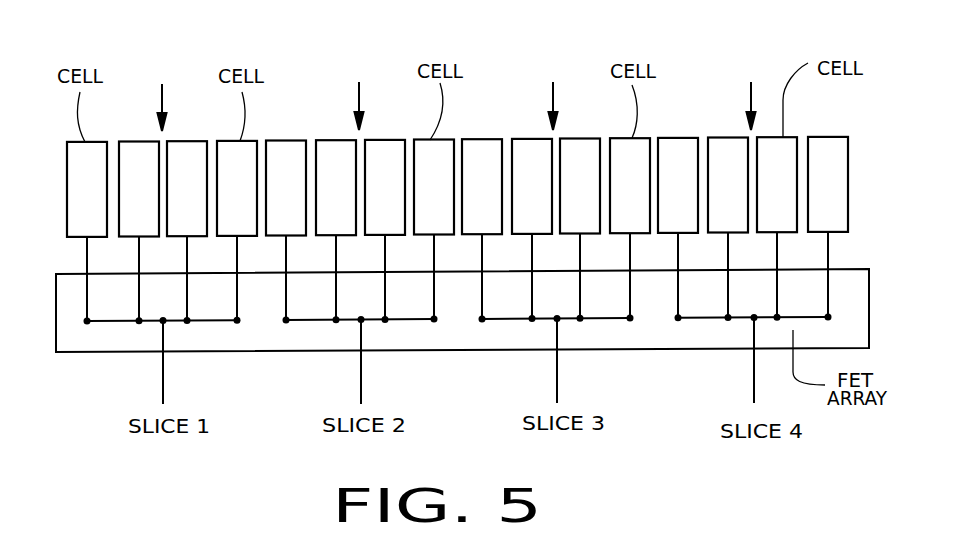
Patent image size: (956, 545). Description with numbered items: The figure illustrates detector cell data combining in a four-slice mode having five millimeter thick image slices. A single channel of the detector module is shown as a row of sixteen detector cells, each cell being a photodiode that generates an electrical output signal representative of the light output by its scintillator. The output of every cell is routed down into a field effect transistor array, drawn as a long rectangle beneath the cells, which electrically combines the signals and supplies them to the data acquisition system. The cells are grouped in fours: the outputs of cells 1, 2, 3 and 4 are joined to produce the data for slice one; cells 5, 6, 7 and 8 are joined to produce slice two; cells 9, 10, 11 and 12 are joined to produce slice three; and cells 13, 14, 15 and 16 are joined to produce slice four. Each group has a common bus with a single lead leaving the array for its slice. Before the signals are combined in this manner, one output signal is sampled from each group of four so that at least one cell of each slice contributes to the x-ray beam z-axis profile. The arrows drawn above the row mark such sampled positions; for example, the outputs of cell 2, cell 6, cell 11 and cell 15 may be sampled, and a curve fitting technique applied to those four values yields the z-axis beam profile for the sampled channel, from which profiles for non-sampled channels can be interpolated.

The cell 1 is at (87, 231).
The cell 2 is at (139, 231).
The cell 3 is at (187, 230).
The cell 4 is at (237, 230).
The cell 5 is at (286, 230).
The cell 6 is at (336, 230).
The cell 7 is at (385, 230).
The cell 8 is at (434, 230).
The cell 9 is at (482, 229).
The cell 10 is at (532, 229).
The cell 11 is at (580, 229).
The cell 12 is at (630, 228).
The cell 13 is at (678, 228).
The cell 14 is at (728, 228).
The cell 15 is at (777, 227).
The cell 16 is at (828, 227).